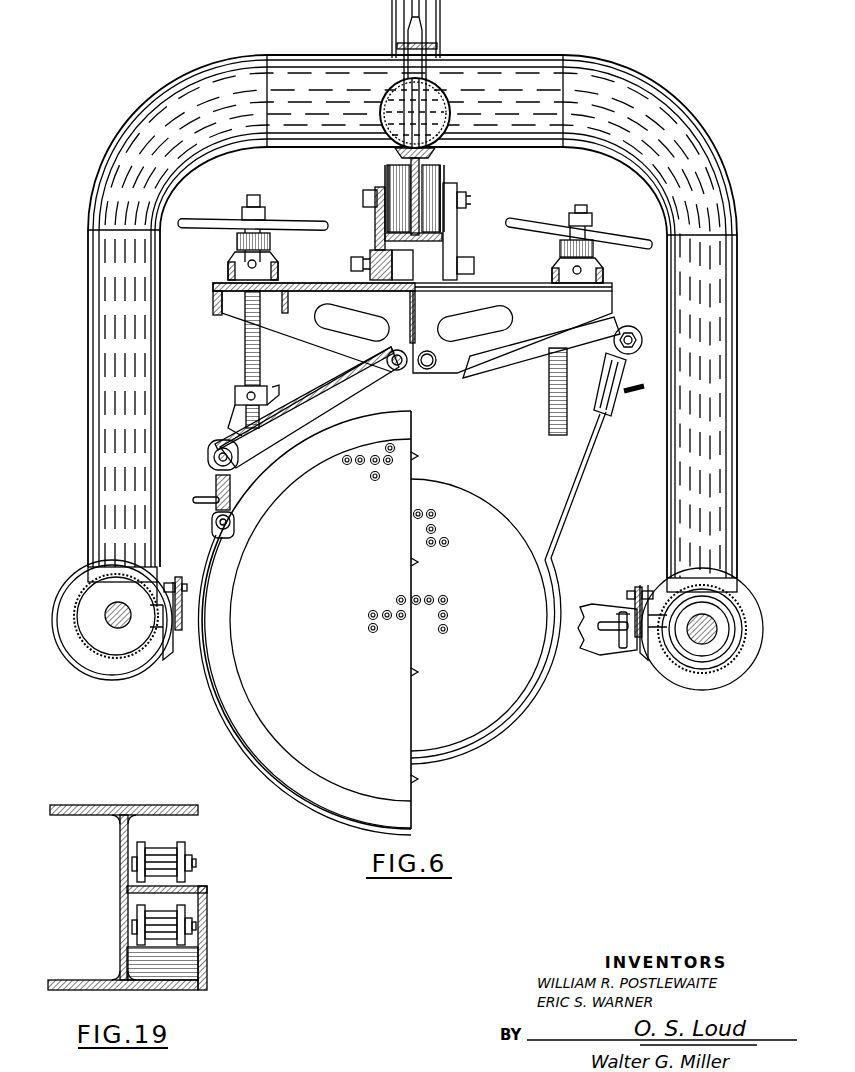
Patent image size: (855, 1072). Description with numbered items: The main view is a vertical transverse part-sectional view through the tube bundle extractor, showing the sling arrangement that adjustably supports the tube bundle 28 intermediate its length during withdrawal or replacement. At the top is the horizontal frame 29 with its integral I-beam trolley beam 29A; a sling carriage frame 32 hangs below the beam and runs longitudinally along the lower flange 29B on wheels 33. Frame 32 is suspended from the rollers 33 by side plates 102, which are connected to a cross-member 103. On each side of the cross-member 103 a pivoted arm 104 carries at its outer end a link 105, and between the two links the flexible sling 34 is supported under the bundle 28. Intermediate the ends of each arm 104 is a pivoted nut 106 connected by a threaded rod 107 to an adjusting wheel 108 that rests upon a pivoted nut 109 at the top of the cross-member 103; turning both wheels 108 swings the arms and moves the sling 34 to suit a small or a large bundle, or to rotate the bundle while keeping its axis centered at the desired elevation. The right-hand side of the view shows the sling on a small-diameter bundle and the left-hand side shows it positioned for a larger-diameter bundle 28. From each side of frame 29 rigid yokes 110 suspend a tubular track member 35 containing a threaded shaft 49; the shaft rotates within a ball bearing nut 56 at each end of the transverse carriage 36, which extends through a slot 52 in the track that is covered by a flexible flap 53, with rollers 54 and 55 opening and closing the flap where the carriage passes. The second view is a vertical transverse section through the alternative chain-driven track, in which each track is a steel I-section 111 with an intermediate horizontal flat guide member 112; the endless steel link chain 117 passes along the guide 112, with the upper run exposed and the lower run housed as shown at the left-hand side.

In FIG. 6, the horizontal frame 29 is at (470, 58).
In FIG. 6, the trolley beam 29A is at (447, 153).
In FIG. 6, the lower flange 29B is at (438, 224).
In FIG. 6, the yokes 110 is at (136, 137).
In FIG. 6, the wheels 33 is at (388, 180).
In FIG. 6, the side plates 102 is at (458, 233).
In FIG. 6, the cross-member 103 is at (345, 283).
In FIG. 6, the sling carriage frame 32 is at (430, 378).
In FIG. 6, the pivoted arm 104 is at (318, 382).
In FIG. 6, the threaded rod 107 is at (245, 356).
In FIG. 6, the pivoted nut 106 is at (238, 390).
In FIG. 6, the adjusting wheel 108 is at (289, 222).
In FIG. 6, the pivoted nut 109 is at (236, 243).
In FIG. 6, the link 105 is at (216, 487).
In FIG. 6, the sling 34 is at (250, 556).
In FIG. 6, the tube bundle 28 is at (356, 589).
In FIG. 6, the track member 35 is at (93, 650).
In FIG. 6, the ball bearing nut 56 is at (698, 657).
In FIG. 6, the threaded shaft 49 is at (110, 617).
In FIG. 6, the slot 52 is at (165, 660).
In FIG. 6, the flap 53 is at (181, 632).
In FIG. 6, the carriage 36 is at (584, 606).
In FIG. 6, the roller 54 is at (612, 630).
In FIG. 6, the roller 55 is at (624, 645).
In FIG. 19, the I-section 111 is at (102, 980).
In FIG. 19, the guide member 112 is at (198, 887).
In FIG. 19, the link chain 117 is at (185, 846).